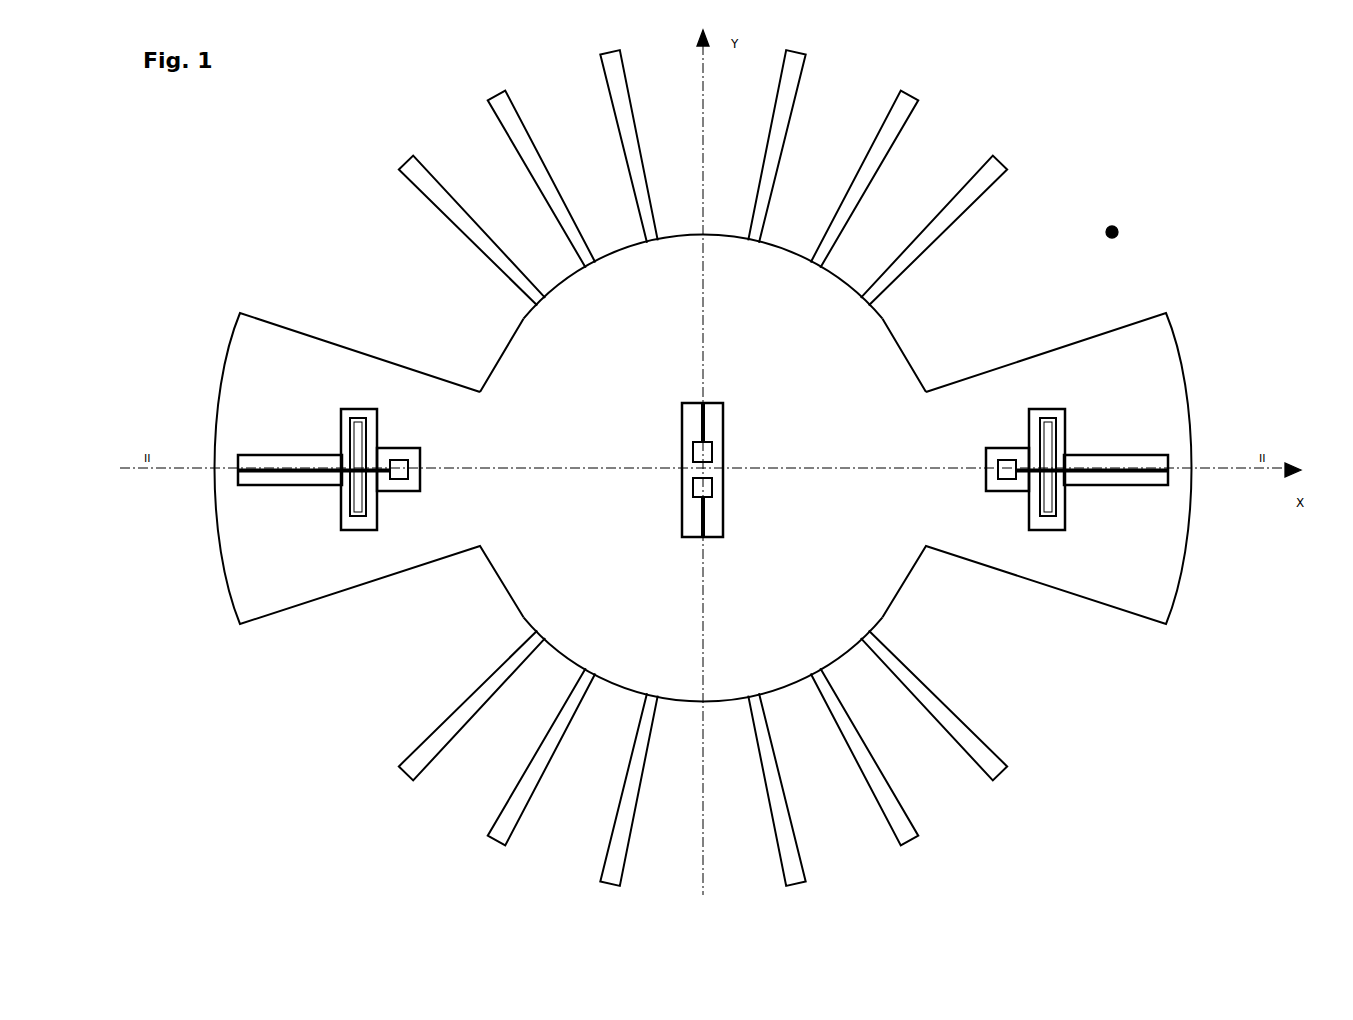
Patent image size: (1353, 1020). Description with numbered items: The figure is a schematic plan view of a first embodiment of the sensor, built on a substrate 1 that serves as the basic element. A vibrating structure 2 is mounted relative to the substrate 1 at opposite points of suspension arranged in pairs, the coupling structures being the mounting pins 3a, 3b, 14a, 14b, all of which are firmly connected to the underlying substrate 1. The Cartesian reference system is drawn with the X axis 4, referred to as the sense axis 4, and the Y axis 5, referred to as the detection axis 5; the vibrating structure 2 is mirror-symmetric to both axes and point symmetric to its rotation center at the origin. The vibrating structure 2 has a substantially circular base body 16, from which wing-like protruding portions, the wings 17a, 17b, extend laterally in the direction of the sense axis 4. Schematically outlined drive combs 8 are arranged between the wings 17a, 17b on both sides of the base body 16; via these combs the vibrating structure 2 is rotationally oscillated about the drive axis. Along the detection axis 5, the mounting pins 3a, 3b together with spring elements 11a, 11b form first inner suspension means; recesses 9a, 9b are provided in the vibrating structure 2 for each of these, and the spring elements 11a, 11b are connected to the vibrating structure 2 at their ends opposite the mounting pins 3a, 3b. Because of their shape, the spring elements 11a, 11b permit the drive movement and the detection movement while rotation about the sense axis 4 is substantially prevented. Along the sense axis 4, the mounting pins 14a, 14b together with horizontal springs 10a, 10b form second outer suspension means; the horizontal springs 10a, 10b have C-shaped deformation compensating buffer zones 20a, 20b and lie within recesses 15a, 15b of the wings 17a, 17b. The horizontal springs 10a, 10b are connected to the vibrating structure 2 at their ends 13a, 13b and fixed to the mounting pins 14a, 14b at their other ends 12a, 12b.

The substrate 1 is at (1118, 226).
The vibrating structure 2 is at (902, 339).
The mounting pin 3a is at (688, 452).
The mounting pin 3b is at (688, 490).
The X axis 4 is at (1223, 461).
The Y axis 5 is at (712, 84).
The drive combs 8 is at (606, 48).
The recess 9a is at (686, 423).
The recess 9b is at (687, 517).
The horizontal spring 10a is at (1074, 484).
The horizontal spring 10b is at (336, 503).
The spring element 11a is at (708, 427).
The spring element 11b is at (708, 518).
The end of horizontal spring 12a is at (1019, 479).
The end of horizontal spring 12b is at (383, 478).
The end of horizontal spring 13a is at (1152, 486).
The end of horizontal spring 13b is at (246, 482).
The mounting pin 14a is at (1030, 466).
The mounting pin 14b is at (410, 462).
The recess 15a is at (1091, 437).
The recess 15b is at (337, 461).
The base body 16 is at (616, 371).
The wing 17a is at (1138, 522).
The wing 17b is at (287, 512).
The buffer zone 20a is at (1048, 525).
The buffer zone 20b is at (357, 527).